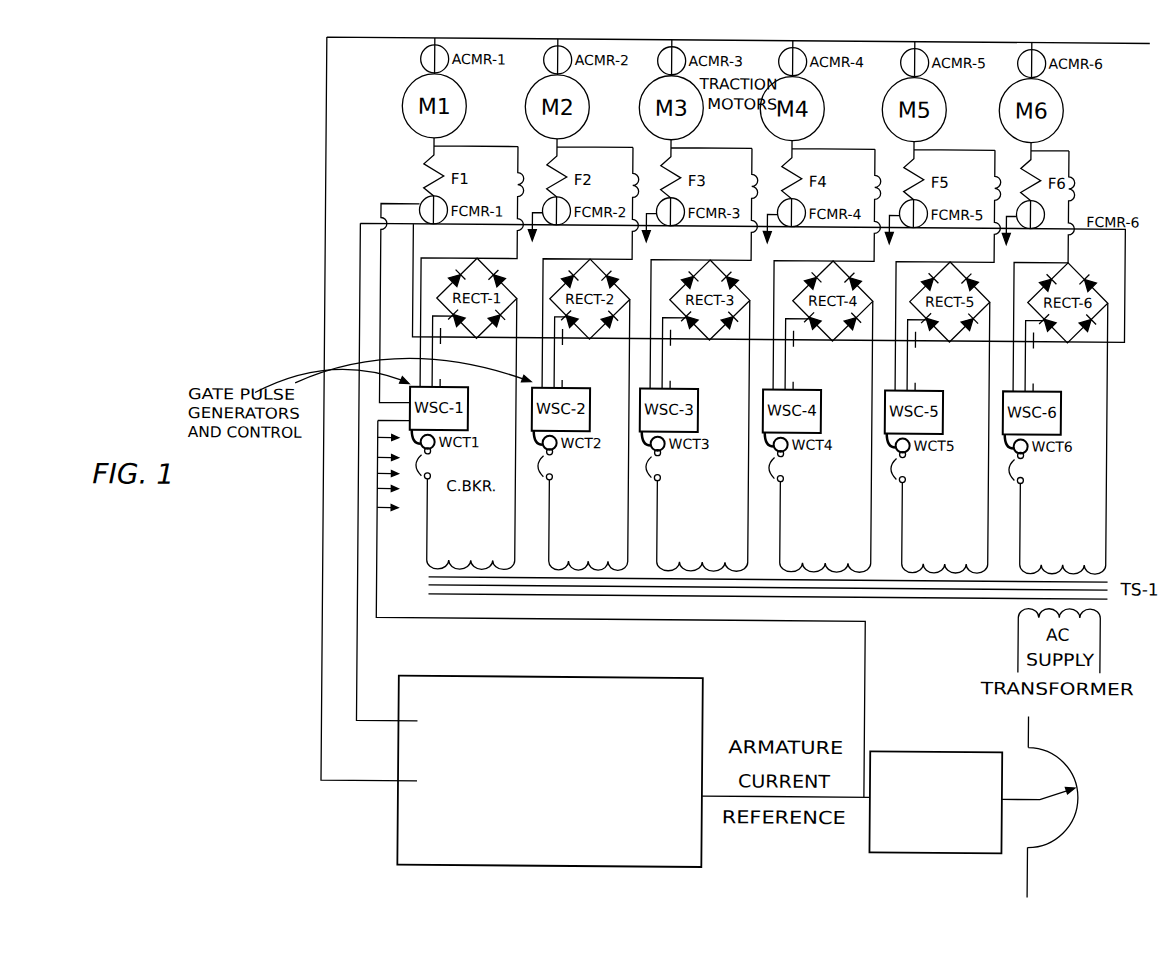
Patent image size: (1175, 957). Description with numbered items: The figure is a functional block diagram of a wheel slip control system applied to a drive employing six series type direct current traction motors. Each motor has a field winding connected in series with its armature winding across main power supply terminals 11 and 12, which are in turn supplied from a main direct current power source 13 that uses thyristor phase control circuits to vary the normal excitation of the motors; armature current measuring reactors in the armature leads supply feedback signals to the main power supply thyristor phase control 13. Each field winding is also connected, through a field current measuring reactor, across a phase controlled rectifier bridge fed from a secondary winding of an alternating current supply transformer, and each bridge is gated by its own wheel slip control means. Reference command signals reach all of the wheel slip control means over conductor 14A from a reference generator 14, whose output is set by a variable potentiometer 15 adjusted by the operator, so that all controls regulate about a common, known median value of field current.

The main power supply terminal 11 is at (601, 40).
The main power supply terminal 12 is at (582, 229).
The main direct current power source 13 is at (604, 678).
The reference generator 14 is at (924, 750).
The conductor 14A is at (774, 621).
The variable potentiometer 15 is at (1070, 759).